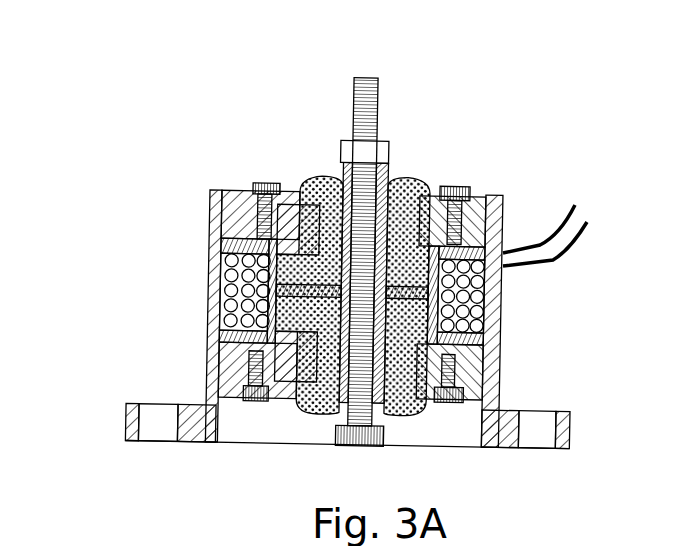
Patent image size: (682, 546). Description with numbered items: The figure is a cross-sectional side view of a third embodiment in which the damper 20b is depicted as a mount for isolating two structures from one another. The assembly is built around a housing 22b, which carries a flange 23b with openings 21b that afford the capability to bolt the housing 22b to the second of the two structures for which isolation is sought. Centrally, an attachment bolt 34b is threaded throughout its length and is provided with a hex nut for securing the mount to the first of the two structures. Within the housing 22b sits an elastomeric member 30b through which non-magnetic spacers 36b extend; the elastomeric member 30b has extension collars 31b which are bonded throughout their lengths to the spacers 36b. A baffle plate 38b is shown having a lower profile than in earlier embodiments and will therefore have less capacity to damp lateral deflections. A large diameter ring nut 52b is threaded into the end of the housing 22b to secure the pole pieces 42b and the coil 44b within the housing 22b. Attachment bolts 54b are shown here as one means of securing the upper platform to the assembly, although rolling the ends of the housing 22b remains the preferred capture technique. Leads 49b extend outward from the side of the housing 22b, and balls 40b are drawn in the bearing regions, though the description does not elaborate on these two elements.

The damper 20b is at (436, 172).
The openings 21b is at (157, 435).
The housing 22b is at (210, 223).
The flange 23b is at (133, 428).
The elastomeric member 30b is at (310, 177).
The extension collars 31b is at (212, 332).
The attachment bolt 34b is at (355, 103).
The non-magnetic spacers 36b is at (377, 170).
The baffle plate 38b is at (210, 315).
The bearing balls 40b is at (230, 267).
The pole pieces 42b is at (488, 193).
The coil 44b is at (487, 305).
The electrical leads 49b is at (575, 230).
The ring nut 52b is at (472, 410).
The attachment bolts 54b is at (250, 185).